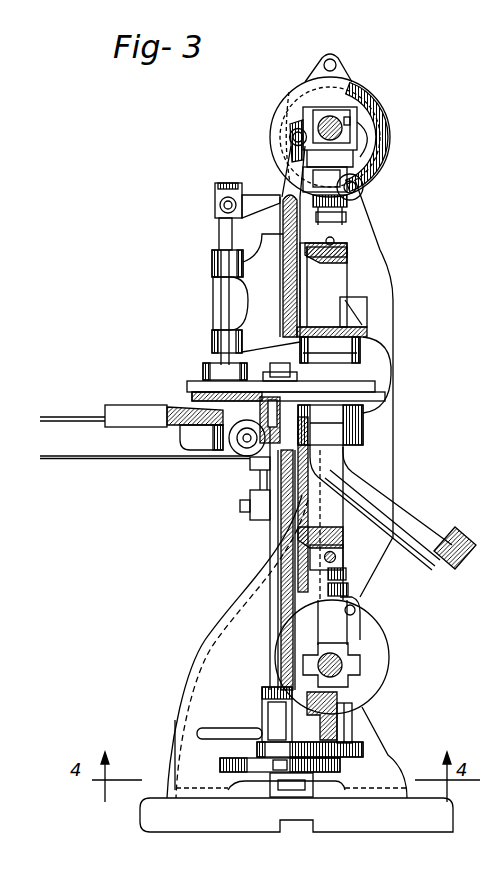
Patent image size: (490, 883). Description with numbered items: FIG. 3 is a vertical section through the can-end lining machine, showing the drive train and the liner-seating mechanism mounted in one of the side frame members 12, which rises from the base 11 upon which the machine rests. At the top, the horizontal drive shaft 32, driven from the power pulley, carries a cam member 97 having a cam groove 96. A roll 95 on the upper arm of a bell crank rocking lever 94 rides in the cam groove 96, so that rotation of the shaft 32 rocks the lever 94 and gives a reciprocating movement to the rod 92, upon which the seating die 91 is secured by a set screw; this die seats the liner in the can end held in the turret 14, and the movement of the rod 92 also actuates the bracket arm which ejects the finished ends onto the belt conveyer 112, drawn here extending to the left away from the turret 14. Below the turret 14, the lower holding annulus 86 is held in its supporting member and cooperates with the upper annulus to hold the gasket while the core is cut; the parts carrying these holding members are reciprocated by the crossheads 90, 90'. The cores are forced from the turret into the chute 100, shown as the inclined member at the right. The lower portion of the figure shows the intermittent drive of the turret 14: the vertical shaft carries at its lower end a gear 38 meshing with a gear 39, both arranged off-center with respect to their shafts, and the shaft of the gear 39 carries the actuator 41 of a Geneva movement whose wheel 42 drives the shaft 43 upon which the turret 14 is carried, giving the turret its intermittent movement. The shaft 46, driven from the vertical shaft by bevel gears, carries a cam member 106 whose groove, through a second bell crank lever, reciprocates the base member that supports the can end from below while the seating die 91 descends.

The base 11 is at (433, 822).
The side frame member 12 is at (366, 576).
The turret 14 is at (187, 386).
The shaft 32 is at (323, 127).
The gear 38 is at (262, 748).
The gear 39 is at (362, 751).
The actuator 41 is at (293, 777).
The wheel 42 is at (340, 763).
The shaft 43 is at (280, 622).
The shaft 46 is at (360, 669).
The lower holding annulus 86 is at (380, 412).
The crosshead 90 is at (364, 142).
The crosshead 90' is at (364, 677).
The seating die 91 is at (205, 370).
The rod 92 is at (218, 313).
The bell crank rocking lever 94 is at (258, 205).
The roll 95 is at (296, 138).
The cam groove 96 is at (378, 135).
The cam member 97 is at (362, 94).
The chute 100 is at (417, 524).
The cam member 106 is at (377, 647).
The belt conveyer 112 is at (168, 426).